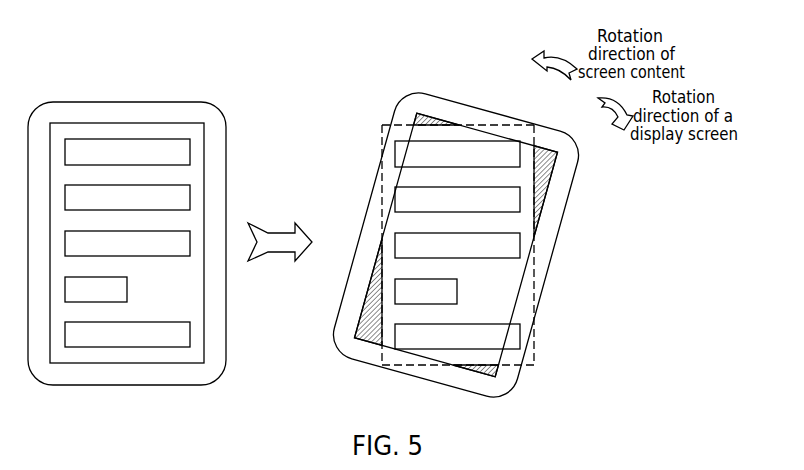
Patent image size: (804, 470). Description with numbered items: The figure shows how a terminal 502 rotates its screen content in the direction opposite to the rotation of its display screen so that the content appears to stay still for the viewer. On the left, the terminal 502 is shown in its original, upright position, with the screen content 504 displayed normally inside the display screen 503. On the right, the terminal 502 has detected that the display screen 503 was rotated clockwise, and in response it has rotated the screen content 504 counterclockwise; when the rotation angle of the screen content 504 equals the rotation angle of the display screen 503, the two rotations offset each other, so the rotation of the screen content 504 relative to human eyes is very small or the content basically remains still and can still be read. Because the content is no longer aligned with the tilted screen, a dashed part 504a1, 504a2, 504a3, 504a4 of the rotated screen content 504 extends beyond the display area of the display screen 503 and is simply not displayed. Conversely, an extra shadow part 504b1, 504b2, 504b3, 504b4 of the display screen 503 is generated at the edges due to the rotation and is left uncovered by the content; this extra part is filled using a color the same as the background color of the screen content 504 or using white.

The terminal 502 is at (70, 101).
The display screen 503 is at (113, 123).
The screen content 504 is at (168, 132).
The part exceeding the display area 504a1 is at (387, 146).
The part exceeding the display area 504a2 is at (389, 353).
The part exceeding the display area 504a3 is at (525, 317).
The part exceeding the display area 504a4 is at (513, 132).
The extra part generated due to rotation 504b1 is at (410, 119).
The extra part generated due to rotation 504b2 is at (360, 319).
The extra part generated due to rotation 504b3 is at (477, 375).
The extra part generated due to rotation 504b4 is at (553, 179).